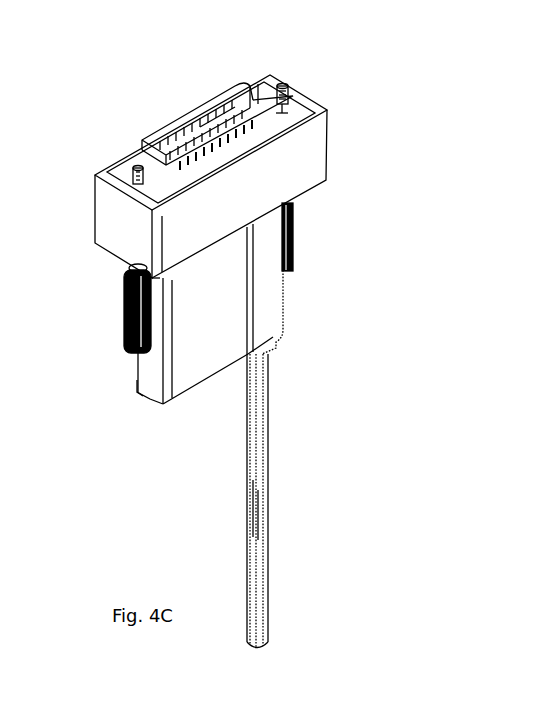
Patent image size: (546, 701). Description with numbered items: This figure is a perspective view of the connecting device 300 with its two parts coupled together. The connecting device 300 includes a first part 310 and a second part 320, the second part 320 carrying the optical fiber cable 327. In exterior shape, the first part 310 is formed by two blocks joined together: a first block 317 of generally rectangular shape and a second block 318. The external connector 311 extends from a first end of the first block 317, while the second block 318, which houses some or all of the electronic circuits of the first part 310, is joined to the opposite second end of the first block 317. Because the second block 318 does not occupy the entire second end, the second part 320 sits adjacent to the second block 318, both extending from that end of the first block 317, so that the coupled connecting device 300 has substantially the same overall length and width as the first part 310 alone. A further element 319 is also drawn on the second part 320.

The connecting device 300 is at (116, 110).
The first part 310 is at (56, 292).
The external connector 311 is at (230, 98).
The first block 317 is at (115, 238).
The second block 318 is at (145, 366).
The retention strip 319 is at (293, 228).
The second part 320 is at (268, 310).
The optical fiber cable 327 is at (262, 476).